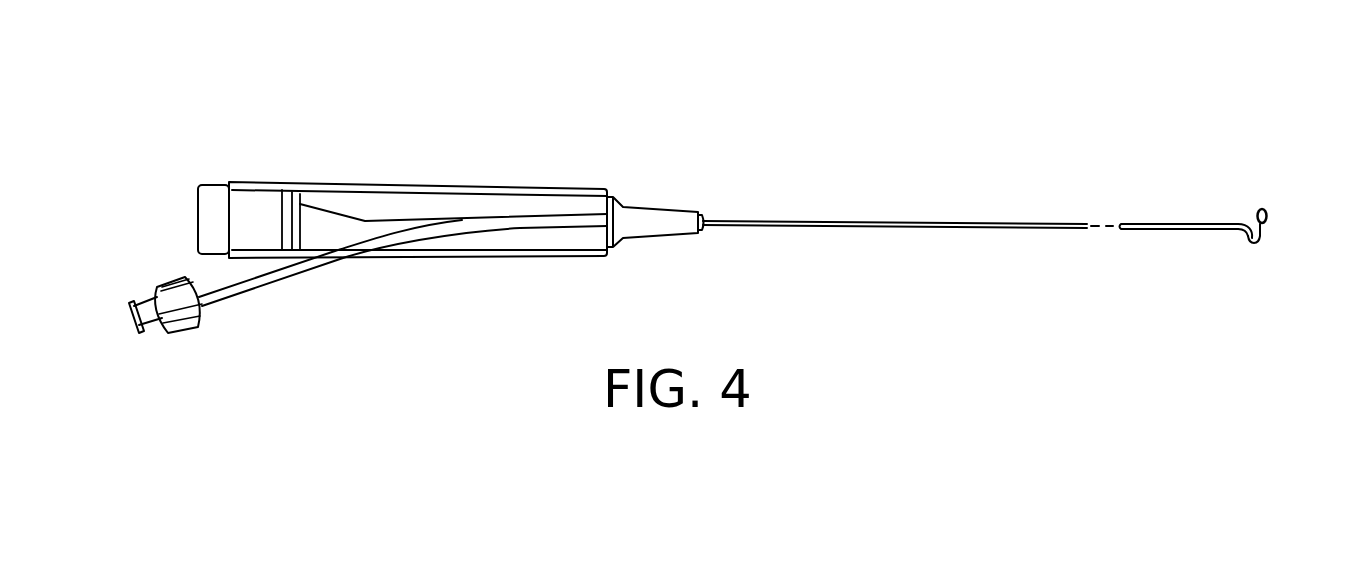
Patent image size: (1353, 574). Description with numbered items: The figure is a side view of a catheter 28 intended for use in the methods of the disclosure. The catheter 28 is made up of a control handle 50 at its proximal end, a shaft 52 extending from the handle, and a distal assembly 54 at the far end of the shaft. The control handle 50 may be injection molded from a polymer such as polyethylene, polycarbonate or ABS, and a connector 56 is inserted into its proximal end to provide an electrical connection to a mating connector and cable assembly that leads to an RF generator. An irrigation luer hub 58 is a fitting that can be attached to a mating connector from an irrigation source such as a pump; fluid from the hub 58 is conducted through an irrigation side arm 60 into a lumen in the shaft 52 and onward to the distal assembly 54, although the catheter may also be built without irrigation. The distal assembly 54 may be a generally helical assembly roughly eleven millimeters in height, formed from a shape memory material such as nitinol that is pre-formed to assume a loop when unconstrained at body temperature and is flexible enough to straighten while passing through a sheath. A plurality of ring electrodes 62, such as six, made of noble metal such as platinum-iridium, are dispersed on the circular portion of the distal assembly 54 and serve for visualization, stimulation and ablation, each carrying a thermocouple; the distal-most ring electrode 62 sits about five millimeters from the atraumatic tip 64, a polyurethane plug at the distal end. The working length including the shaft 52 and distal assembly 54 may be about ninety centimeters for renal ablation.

The catheter 28 is at (826, 136).
The control handle 50 is at (418, 185).
The shaft 52 is at (898, 231).
The distal assembly 54 is at (1256, 268).
The connector 56 is at (204, 170).
The irrigation luer hub 58 is at (192, 327).
The irrigation side arm 60 is at (279, 280).
The ring electrode 62 is at (1258, 213).
The atraumatic tip 64 is at (1260, 240).